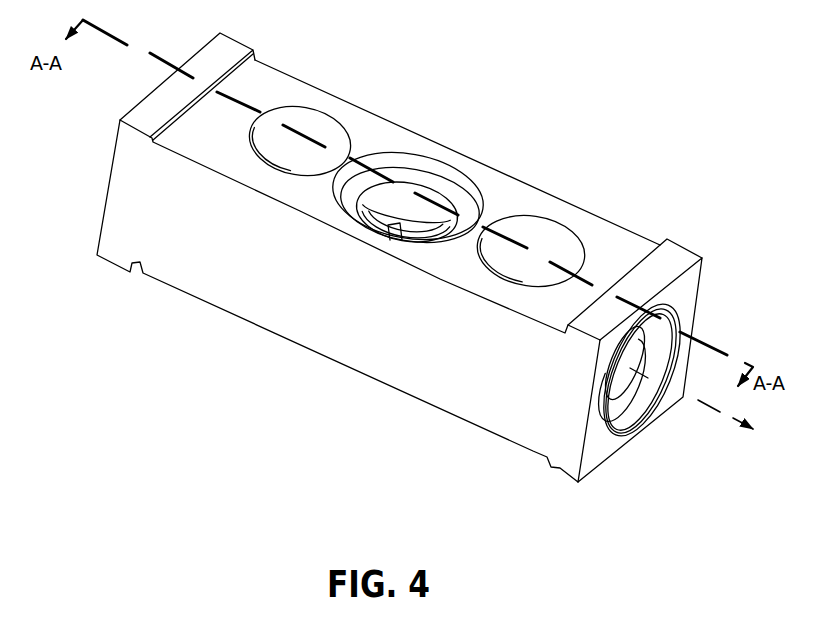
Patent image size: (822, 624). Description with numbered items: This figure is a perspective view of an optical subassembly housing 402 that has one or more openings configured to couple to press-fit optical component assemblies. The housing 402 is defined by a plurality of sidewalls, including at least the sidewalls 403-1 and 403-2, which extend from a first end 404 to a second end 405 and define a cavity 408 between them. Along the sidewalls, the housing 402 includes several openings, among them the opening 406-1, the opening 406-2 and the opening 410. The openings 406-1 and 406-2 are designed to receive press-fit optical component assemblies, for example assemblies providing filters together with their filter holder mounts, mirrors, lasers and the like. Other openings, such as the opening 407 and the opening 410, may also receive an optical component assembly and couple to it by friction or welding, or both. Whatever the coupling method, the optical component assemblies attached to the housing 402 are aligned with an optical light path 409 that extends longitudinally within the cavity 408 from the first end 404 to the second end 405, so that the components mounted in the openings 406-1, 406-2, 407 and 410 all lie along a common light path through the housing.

The optical subassembly housing 402 is at (481, 177).
The sidewall 403-1 is at (327, 102).
The sidewall 403-2 is at (300, 323).
The first end 404 is at (153, 98).
The second end 405 is at (677, 255).
The opening 406-1 is at (250, 152).
The opening 406-2 is at (494, 280).
The opening 407 is at (368, 229).
The cavity 408 is at (620, 387).
The optical light path 409 is at (753, 427).
The opening 410 is at (602, 371).